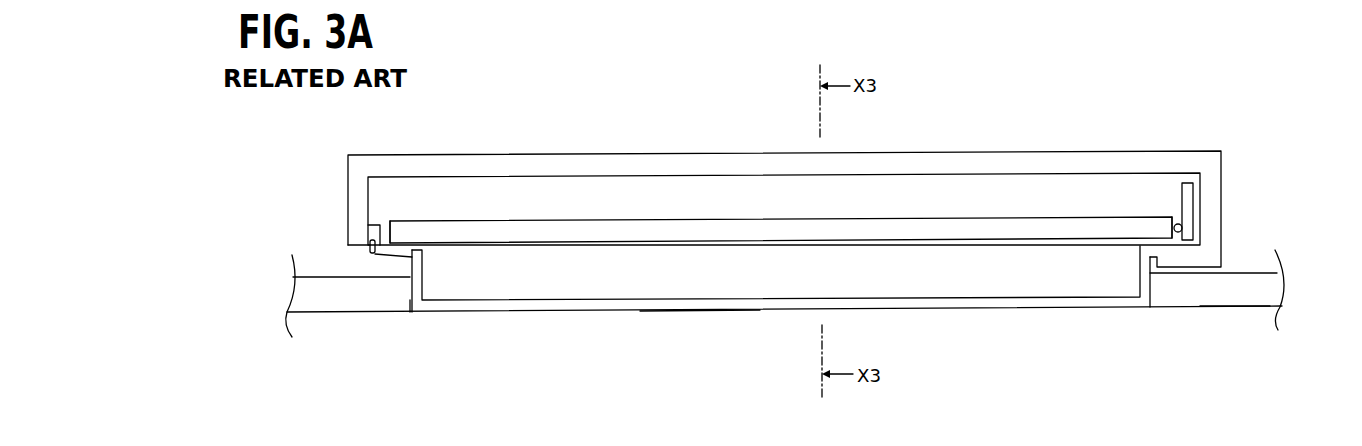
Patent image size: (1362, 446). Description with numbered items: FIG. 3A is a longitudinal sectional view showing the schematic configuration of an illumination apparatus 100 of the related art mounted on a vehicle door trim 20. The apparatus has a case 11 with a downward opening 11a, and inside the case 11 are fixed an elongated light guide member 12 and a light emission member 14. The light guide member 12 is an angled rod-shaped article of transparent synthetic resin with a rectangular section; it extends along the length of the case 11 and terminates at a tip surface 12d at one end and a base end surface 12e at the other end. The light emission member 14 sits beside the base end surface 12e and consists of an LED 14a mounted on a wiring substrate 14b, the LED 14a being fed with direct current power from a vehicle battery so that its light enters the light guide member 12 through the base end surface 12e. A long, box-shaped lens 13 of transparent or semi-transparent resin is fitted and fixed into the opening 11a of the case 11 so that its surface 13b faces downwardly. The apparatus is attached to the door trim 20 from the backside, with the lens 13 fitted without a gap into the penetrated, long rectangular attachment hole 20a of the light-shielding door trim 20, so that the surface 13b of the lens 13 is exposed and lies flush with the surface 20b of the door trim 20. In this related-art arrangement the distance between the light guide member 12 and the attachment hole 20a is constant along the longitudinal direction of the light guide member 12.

The illumination apparatus 100 is at (1334, 59).
The case 11 is at (360, 154).
The opening 11a is at (371, 250).
The light guide member 12 is at (988, 242).
The tip surface 12d is at (396, 208).
The base end surface 12e is at (1176, 222).
The lens 13 is at (579, 312).
The surface 13b is at (699, 311).
The light emission member 14 is at (1243, 208).
The LED 14a is at (1183, 229).
The wiring substrate 14b is at (1196, 191).
The door trim 20 is at (343, 312).
The attachment hole 20a is at (418, 303).
The surface 20b is at (1237, 307).